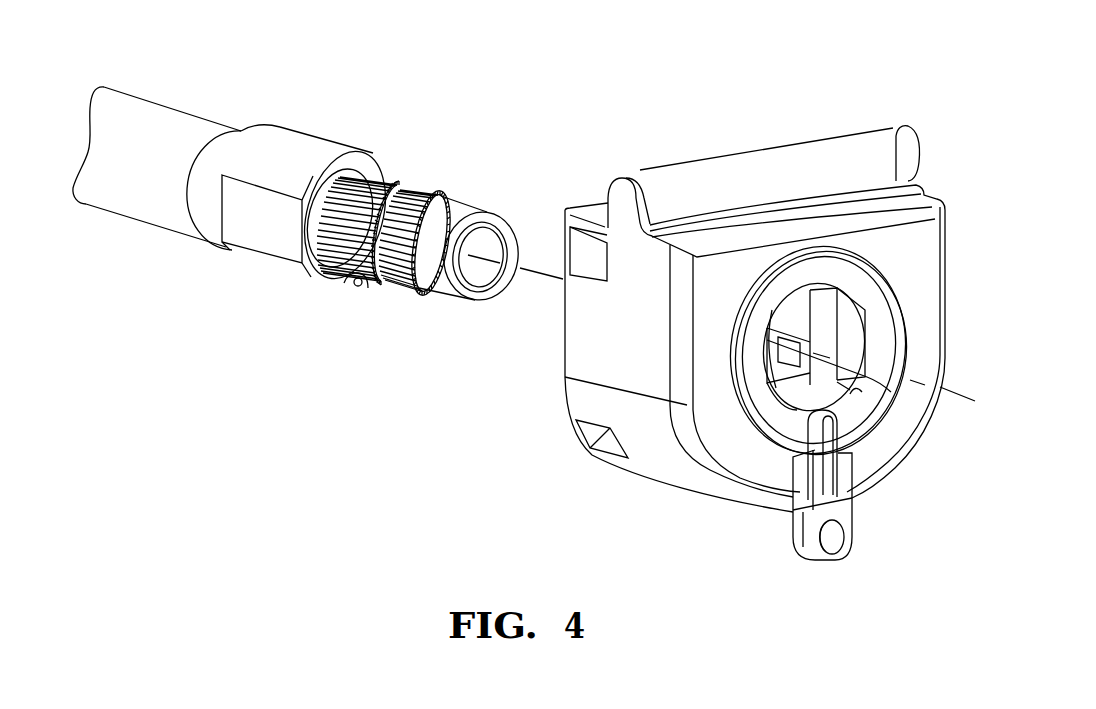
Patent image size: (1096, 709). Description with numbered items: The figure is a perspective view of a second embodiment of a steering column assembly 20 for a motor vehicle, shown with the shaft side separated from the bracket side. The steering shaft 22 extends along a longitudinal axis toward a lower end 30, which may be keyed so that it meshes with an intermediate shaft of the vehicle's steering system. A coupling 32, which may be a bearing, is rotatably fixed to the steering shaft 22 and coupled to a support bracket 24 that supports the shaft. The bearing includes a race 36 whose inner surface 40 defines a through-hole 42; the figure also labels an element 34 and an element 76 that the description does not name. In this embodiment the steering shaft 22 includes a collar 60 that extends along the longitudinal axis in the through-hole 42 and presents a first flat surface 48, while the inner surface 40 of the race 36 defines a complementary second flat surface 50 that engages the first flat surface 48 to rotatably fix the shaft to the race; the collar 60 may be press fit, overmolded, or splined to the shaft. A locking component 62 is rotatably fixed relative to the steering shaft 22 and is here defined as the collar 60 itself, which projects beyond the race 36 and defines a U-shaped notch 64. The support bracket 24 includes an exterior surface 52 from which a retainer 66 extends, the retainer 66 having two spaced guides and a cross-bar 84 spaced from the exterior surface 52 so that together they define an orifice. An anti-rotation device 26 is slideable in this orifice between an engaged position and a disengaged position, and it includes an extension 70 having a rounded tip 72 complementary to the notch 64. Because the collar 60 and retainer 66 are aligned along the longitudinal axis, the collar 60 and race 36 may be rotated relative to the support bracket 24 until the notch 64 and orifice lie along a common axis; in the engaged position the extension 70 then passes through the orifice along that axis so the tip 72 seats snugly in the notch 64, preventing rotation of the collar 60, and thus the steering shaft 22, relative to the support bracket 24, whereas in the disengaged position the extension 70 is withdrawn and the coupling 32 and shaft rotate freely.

The steering column assembly 20 is at (437, 487).
The steering shaft 22 is at (185, 122).
The support bracket 24 is at (907, 240).
The anti-rotation device 26 is at (856, 535).
The lower end 30 is at (490, 226).
The coupling 32 is at (886, 323).
The latch finger 34 is at (845, 455).
The race 36 is at (843, 338).
The inner surface 40 is at (862, 392).
The through-hole 42 is at (790, 312).
The first flat surface 48 is at (767, 372).
The second flat surface 50 is at (810, 279).
The exterior surface 52 is at (718, 272).
The collar 60 is at (248, 258).
The locking component 62 is at (332, 291).
The notch 64 is at (360, 288).
The retainer 66 is at (847, 497).
The extension 70 is at (838, 420).
The tip 72 is at (800, 400).
The nut shoulder 76 is at (302, 280).
The cross-bar 84 is at (812, 547).